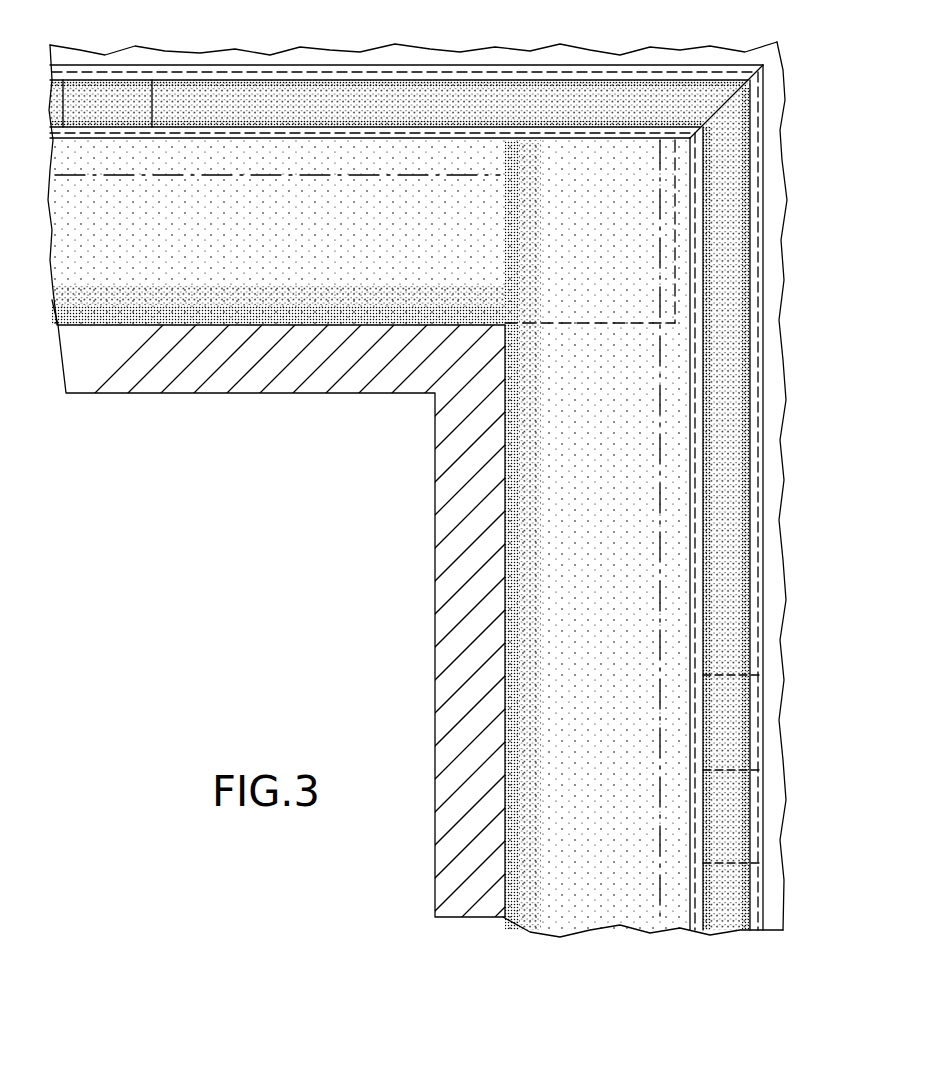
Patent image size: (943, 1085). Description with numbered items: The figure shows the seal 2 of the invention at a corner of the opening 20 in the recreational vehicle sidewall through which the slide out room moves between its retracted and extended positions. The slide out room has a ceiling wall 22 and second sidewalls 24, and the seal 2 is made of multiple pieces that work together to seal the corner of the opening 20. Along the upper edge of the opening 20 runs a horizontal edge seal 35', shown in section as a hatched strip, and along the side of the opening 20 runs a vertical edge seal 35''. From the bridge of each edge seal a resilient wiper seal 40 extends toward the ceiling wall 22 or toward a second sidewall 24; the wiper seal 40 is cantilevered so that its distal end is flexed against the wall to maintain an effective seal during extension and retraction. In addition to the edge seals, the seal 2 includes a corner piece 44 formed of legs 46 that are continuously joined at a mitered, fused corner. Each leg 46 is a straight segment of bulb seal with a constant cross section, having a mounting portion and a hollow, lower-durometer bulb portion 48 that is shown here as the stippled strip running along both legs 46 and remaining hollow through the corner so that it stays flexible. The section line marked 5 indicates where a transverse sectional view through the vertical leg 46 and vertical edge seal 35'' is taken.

The seal 2 is at (774, 94).
The corner piece 44 is at (616, 47).
The leg 46 is at (764, 212).
The bulb portion 48 is at (379, 97).
The wiper seal 40 is at (289, 254).
The opening 20 is at (471, 500).
The ceiling wall 22 is at (154, 382).
The second sidewall 24 is at (450, 690).
The horizontal edge seal 35' is at (61, 372).
The vertical edge seal 35'' is at (612, 950).
The section line 5- 5 is at (428, 573).